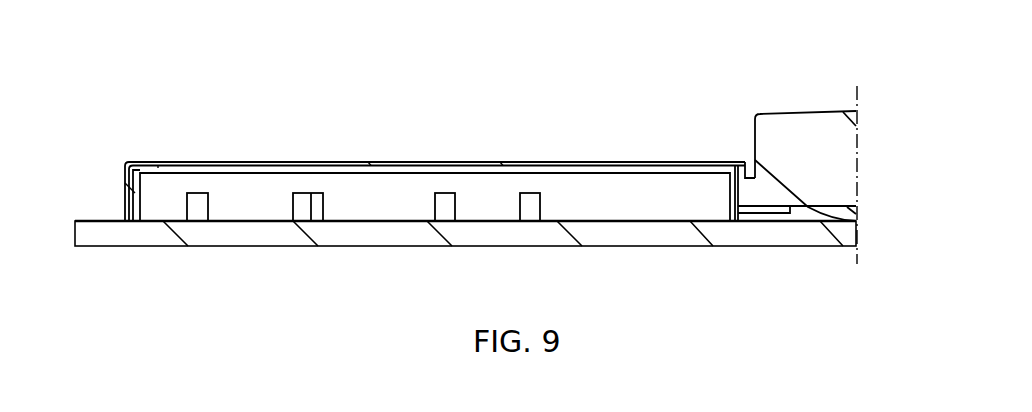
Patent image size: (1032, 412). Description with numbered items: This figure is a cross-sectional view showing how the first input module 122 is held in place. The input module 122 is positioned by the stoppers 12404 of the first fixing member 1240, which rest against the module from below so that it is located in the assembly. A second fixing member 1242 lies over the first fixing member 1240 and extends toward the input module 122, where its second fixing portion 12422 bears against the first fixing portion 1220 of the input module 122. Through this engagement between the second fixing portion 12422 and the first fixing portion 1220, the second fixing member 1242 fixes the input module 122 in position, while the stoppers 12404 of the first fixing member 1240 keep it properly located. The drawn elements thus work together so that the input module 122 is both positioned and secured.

The input module 122 is at (796, 104).
The first fixing portion 1220 is at (742, 180).
The first fixing member 1240 is at (398, 178).
The stoppers 12404 is at (733, 195).
The second fixing member 1242 is at (446, 159).
The second fixing portion 12422 is at (749, 160).